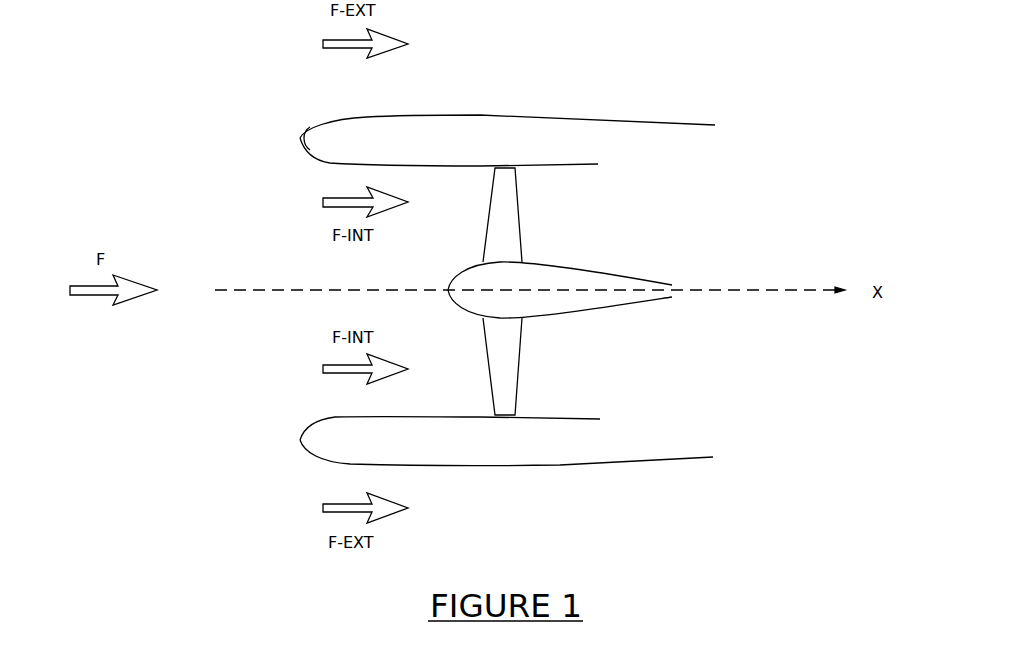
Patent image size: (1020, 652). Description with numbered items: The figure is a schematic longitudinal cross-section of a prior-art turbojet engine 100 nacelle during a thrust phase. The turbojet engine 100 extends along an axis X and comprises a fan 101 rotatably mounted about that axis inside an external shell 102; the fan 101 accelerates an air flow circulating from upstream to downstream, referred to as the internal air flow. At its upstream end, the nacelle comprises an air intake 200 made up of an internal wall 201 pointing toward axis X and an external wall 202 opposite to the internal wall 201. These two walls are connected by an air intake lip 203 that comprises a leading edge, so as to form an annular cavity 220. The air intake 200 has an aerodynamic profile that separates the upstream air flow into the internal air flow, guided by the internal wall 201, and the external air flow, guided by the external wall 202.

The turbojet engine 100 is at (741, 187).
The fan 101 is at (447, 284).
The external shell 102 is at (458, 417).
The air intake 200 is at (292, 430).
The internal wall 201 is at (316, 161).
The external wall 202 is at (340, 120).
The air intake lip 203 is at (300, 138).
The annular cavity 220 is at (333, 433).